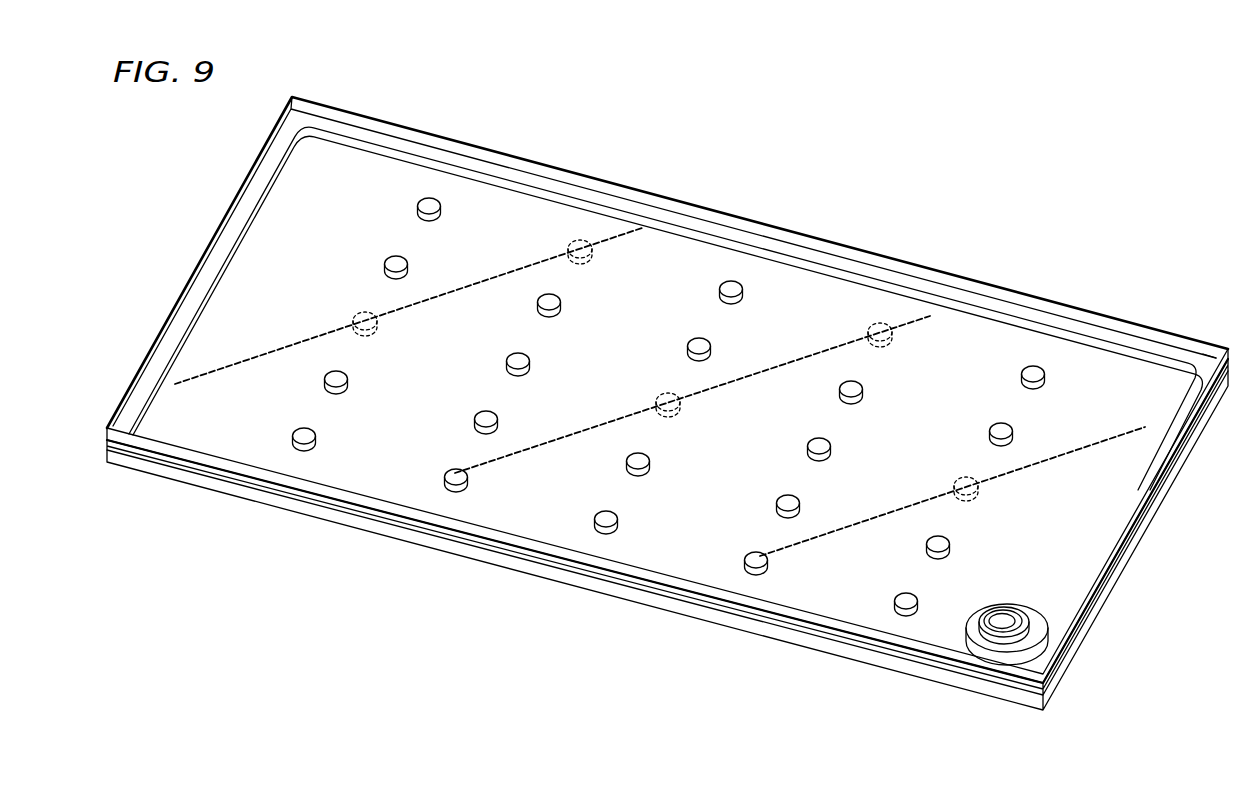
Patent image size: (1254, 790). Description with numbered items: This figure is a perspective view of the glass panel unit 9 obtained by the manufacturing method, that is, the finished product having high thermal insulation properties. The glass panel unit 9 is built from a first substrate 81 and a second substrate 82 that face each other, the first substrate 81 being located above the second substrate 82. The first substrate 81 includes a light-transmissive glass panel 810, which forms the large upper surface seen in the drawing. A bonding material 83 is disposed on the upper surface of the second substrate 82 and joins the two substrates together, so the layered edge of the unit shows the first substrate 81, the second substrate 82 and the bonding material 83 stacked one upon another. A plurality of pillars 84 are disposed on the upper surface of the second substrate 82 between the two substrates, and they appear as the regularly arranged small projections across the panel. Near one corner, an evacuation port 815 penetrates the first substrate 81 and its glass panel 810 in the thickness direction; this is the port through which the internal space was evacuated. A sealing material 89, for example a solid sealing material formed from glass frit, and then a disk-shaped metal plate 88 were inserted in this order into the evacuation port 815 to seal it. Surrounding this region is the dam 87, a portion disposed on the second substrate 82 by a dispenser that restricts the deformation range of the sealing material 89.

The glass panel unit 9 is at (247, 178).
The first glass panel 810 is at (386, 192).
The pillars 84 is at (575, 246).
The first substrate 81 is at (188, 458).
The second substrate 82 is at (278, 505).
The bonding material 83 is at (447, 535).
The dam 87 is at (972, 636).
The plate 88 is at (1005, 626).
The sealing material 89 is at (981, 626).
The evacuation port 815 is at (1019, 617).